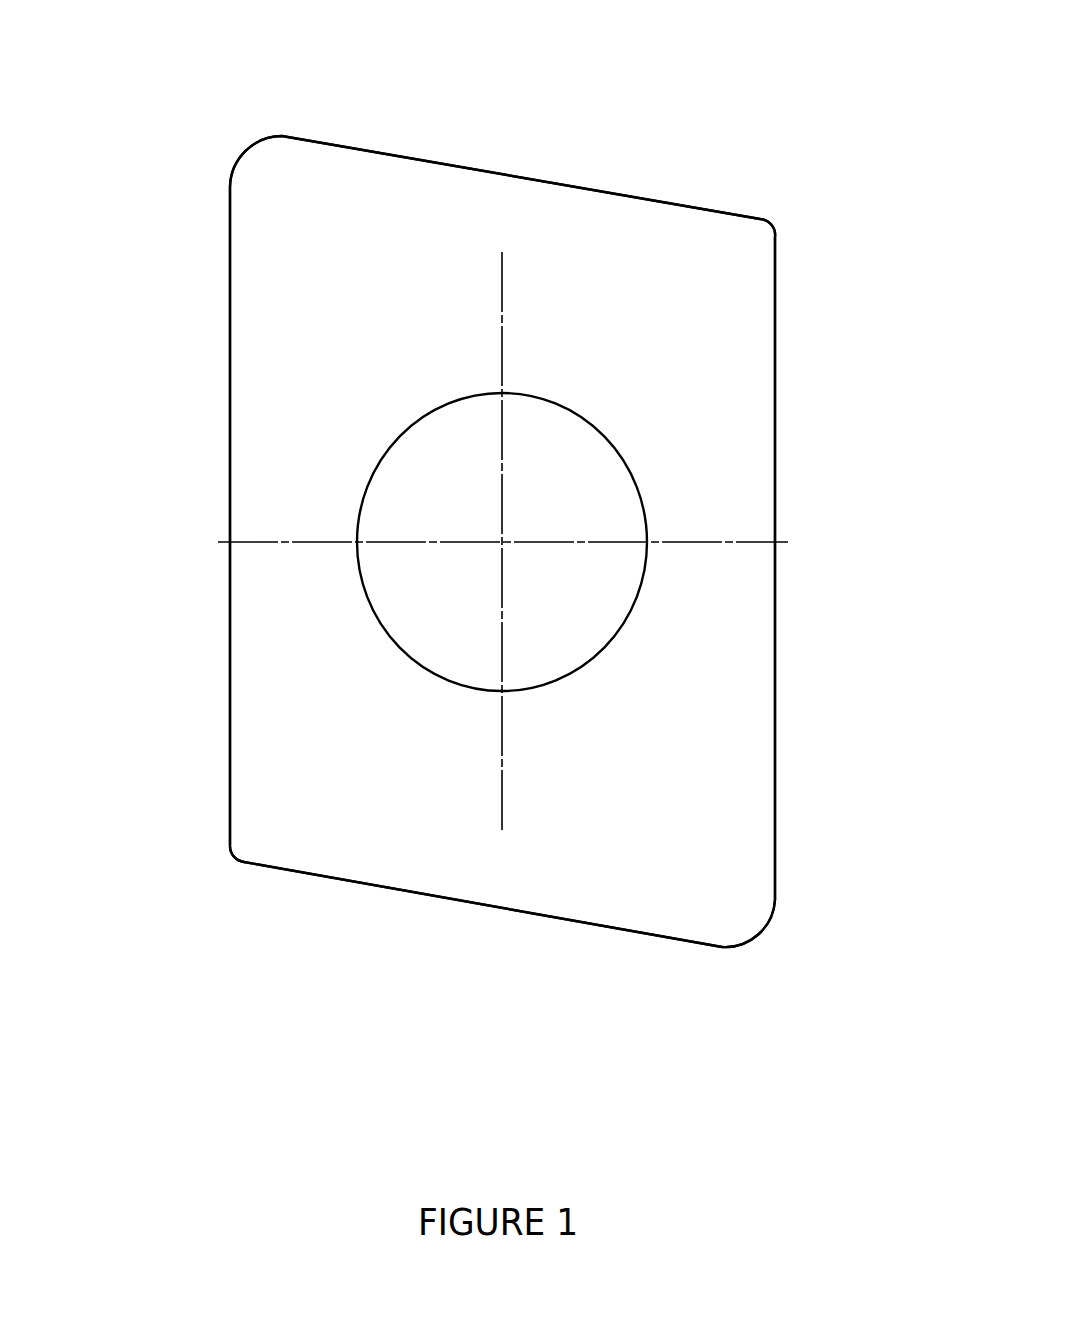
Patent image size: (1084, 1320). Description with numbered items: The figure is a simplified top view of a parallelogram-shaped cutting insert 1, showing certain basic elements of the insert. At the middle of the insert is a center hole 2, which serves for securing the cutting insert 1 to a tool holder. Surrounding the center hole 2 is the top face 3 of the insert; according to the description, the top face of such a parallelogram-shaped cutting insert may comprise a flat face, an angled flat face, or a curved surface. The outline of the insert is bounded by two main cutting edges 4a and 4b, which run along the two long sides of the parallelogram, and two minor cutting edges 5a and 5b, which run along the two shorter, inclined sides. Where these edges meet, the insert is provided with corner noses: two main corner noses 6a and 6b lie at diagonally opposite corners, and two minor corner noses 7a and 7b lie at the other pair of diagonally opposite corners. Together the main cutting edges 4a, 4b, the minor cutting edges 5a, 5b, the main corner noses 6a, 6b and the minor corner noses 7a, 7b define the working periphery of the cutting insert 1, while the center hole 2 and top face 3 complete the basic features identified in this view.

The parallelogram-shaped cutting insert 1 is at (579, 136).
The center hole 2 is at (594, 462).
The top face 3 is at (663, 774).
The main cutting edge 4a is at (227, 487).
The main cutting edge 4b is at (779, 462).
The minor cutting edge 5a is at (431, 155).
The minor cutting edge 5b is at (409, 898).
The main corner nose 6a is at (247, 146).
The main corner nose 6b is at (751, 949).
The minor corner nose 7a is at (771, 221).
The minor corner nose 7b is at (230, 863).